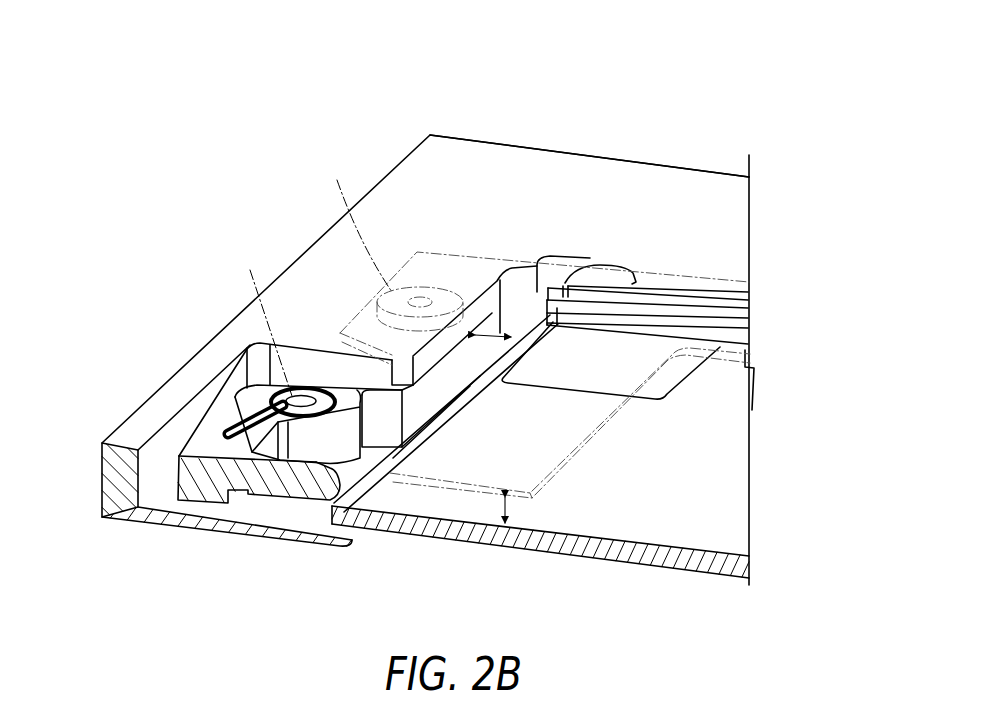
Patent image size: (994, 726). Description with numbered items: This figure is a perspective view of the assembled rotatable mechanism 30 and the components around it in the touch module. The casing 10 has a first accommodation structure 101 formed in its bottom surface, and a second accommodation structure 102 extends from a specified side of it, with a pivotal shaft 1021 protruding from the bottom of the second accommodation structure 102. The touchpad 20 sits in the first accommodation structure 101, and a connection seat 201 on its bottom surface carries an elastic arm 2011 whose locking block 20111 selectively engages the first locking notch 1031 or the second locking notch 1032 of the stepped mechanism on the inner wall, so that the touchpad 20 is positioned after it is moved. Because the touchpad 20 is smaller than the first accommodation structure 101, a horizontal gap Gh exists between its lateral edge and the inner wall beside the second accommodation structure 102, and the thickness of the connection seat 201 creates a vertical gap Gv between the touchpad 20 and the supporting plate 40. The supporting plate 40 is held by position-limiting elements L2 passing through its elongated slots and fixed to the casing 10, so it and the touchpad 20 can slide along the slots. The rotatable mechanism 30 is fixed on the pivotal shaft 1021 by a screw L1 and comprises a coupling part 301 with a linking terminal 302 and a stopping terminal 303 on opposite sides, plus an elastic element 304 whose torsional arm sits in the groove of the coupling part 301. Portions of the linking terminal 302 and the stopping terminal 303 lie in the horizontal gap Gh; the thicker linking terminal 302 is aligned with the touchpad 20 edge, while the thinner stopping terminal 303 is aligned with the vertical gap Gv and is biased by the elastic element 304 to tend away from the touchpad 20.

The casing 10 is at (138, 432).
The first accommodation structure 101 is at (517, 280).
The second accommodation structure 102 is at (125, 478).
The pivotal shaft 1021 is at (325, 390).
The first locking notch 1031 is at (621, 279).
The second locking notch 1032 is at (557, 270).
The touchpad 20 is at (620, 562).
The connection seat 201 is at (738, 335).
The elastic arm 2011 is at (688, 298).
The locking block 20111 is at (640, 262).
The rotatable mechanism 30 is at (76, 52).
The coupling part 301 is at (228, 410).
The linking terminal 302 is at (387, 420).
The stopping terminal 303 is at (268, 496).
The elastic element 304 is at (268, 405).
The supporting plate 40 is at (431, 280).
The screw L1 is at (263, 321).
The position-limiting element L2 is at (359, 225).
The horizontal gap Gh is at (490, 332).
The vertical gap Gv is at (503, 512).